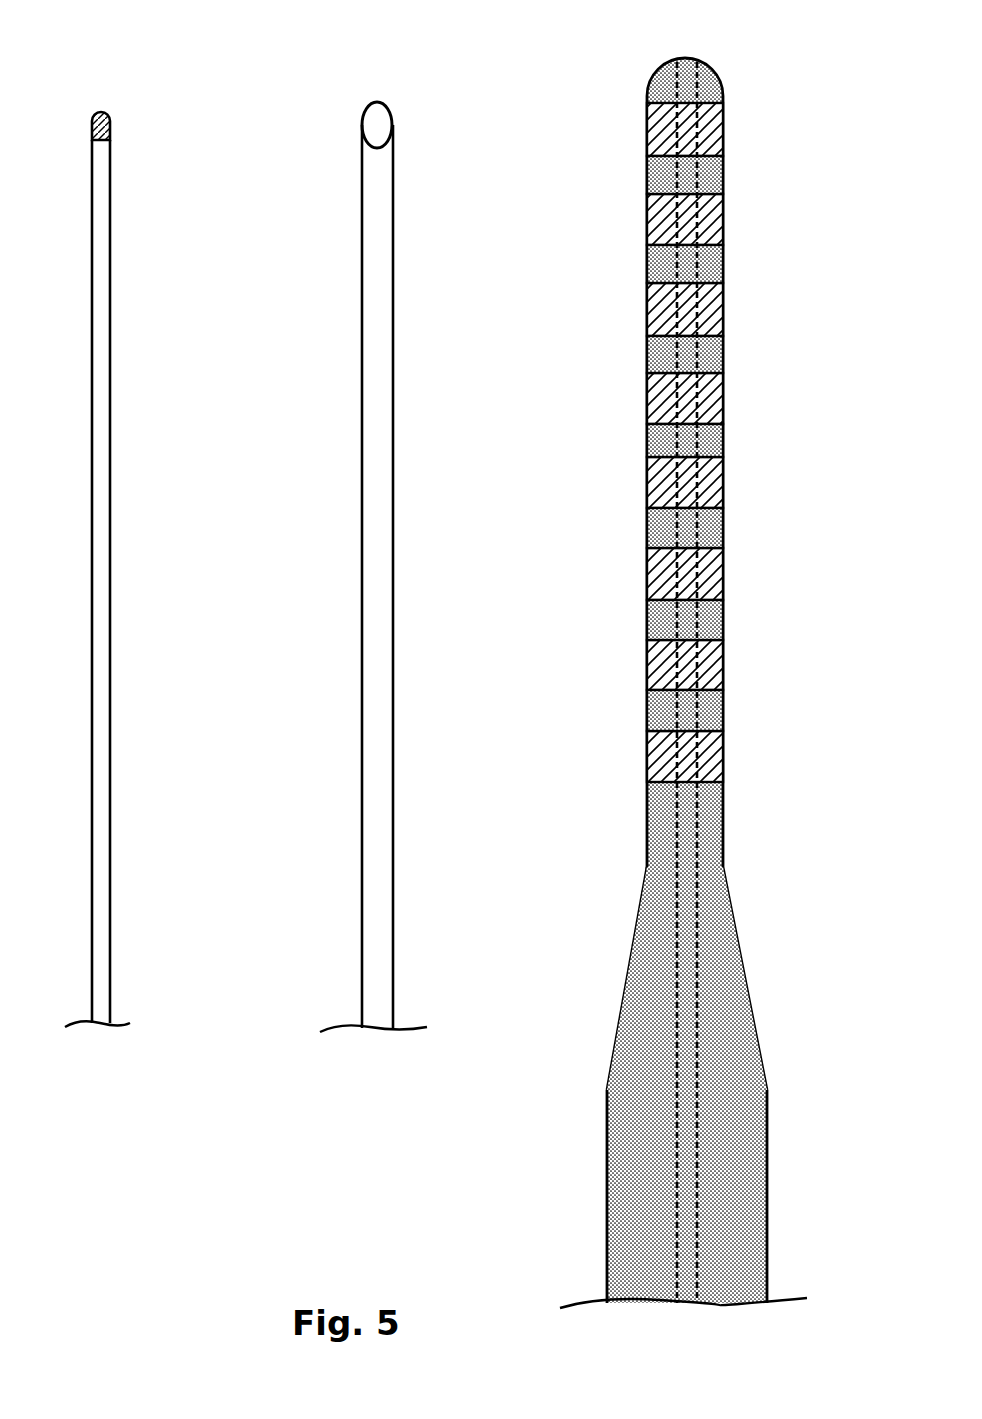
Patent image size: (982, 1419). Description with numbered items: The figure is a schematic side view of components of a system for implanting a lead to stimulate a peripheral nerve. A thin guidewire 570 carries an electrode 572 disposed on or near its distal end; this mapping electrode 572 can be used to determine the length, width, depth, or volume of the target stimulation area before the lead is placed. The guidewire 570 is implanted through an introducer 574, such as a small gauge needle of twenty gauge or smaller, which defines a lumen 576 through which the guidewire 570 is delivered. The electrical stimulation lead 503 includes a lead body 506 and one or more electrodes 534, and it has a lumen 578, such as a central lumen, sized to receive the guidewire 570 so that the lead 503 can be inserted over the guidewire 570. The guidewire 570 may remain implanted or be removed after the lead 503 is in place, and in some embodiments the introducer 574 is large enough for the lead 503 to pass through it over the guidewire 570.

The lead 503 is at (633, 905).
The lead body 506 is at (604, 1152).
The electrodes 534 is at (648, 333).
The lumen 578 is at (676, 263).
The guidewire 570 is at (110, 573).
The electrode 572 is at (108, 128).
The introducer 574 is at (393, 587).
The lumen 576 is at (382, 123).